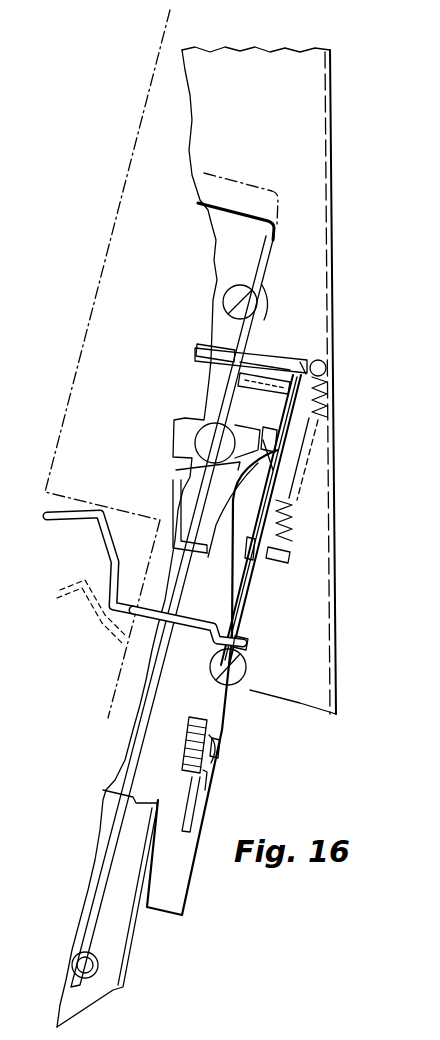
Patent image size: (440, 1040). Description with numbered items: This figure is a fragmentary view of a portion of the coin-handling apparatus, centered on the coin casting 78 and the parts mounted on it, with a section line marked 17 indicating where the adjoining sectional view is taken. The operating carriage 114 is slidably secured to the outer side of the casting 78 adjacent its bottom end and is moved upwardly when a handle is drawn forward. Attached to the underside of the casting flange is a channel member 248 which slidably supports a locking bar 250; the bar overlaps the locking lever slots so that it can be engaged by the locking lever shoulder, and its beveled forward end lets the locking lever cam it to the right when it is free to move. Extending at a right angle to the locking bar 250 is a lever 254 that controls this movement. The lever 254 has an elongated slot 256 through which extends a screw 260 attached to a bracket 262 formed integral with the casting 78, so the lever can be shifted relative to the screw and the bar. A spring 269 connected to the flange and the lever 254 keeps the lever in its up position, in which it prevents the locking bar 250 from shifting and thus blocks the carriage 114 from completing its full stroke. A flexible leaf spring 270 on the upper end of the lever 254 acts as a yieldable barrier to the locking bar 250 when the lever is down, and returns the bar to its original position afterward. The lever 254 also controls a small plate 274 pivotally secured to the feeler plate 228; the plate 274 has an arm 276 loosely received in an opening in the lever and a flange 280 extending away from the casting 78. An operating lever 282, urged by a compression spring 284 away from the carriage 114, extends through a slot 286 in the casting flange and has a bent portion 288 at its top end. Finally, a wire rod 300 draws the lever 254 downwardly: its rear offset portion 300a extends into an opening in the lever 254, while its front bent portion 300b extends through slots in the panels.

The section line 17- 17 is at (196, 34).
The coin casting 78 is at (208, 809).
The operating carriage 114 is at (103, 848).
The feeler plate 228 is at (193, 437).
The channel member 248 is at (205, 378).
The locking bar 250 is at (196, 353).
The lever 254 is at (248, 587).
The elongated slot 256 is at (206, 773).
The screw 260 is at (222, 742).
The bracket 262 is at (192, 770).
The spring 269 is at (300, 521).
The flexible leaf spring 270 is at (312, 358).
The small plate 274 is at (196, 478).
The arm 276 is at (270, 447).
The flange 280 is at (187, 543).
The operating lever 282 is at (150, 705).
The compression spring 284 is at (74, 964).
The slot 286 is at (212, 343).
The bent portion 288 is at (206, 228).
The wire rod 300 is at (187, 618).
The offset portion 300a is at (246, 642).
The bent portion 300b is at (92, 520).